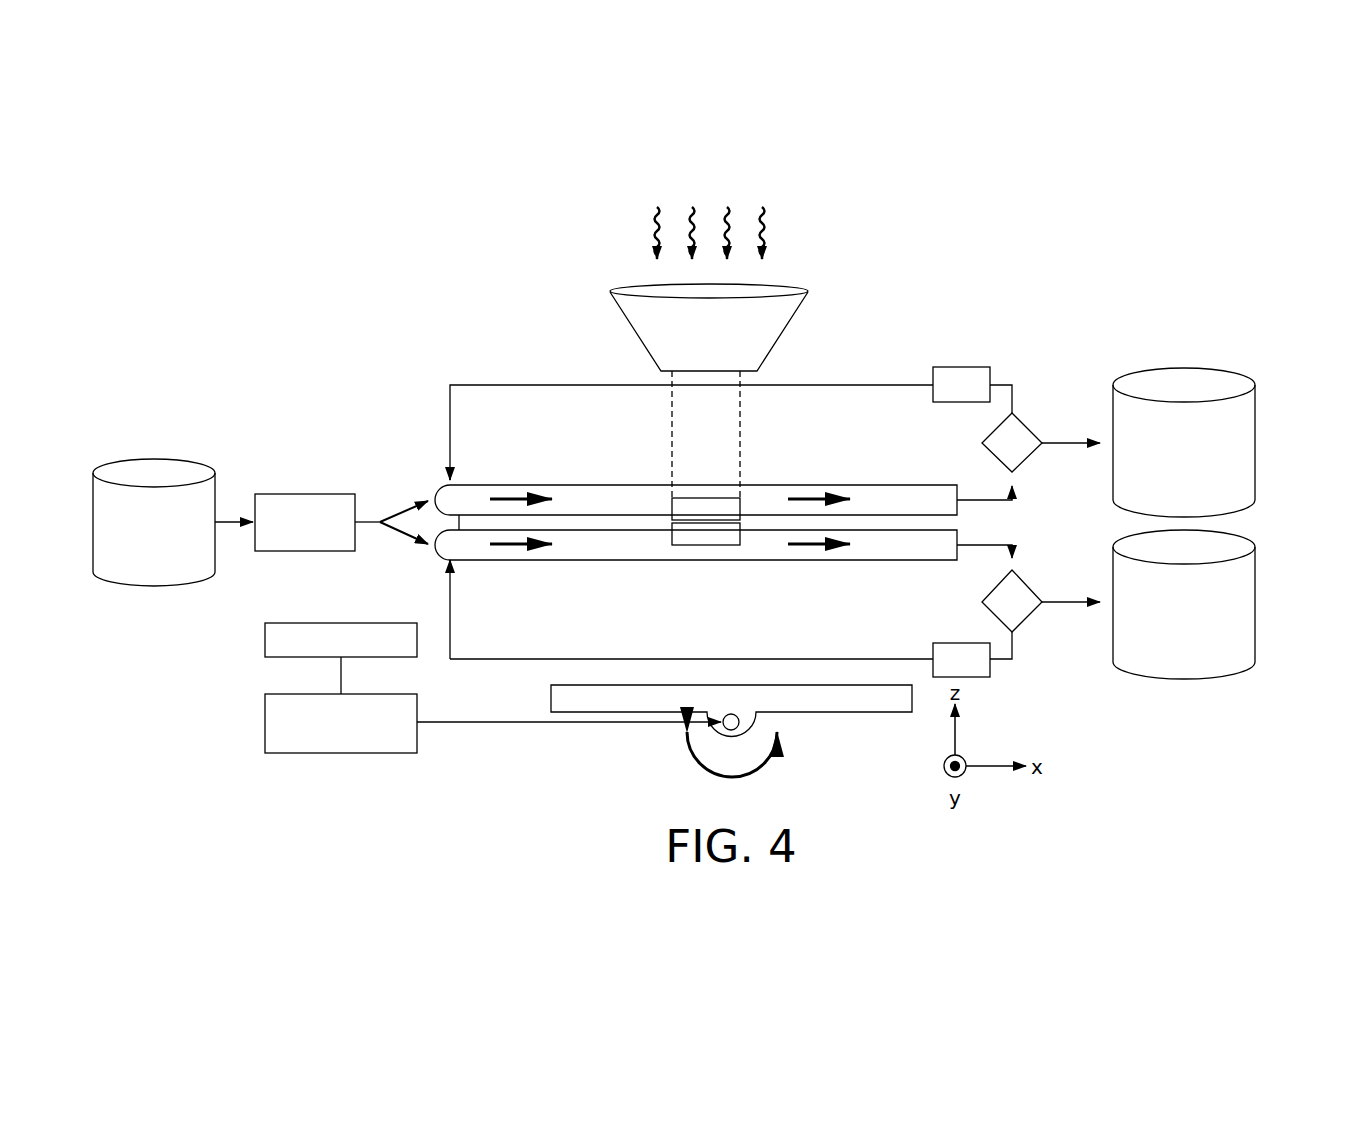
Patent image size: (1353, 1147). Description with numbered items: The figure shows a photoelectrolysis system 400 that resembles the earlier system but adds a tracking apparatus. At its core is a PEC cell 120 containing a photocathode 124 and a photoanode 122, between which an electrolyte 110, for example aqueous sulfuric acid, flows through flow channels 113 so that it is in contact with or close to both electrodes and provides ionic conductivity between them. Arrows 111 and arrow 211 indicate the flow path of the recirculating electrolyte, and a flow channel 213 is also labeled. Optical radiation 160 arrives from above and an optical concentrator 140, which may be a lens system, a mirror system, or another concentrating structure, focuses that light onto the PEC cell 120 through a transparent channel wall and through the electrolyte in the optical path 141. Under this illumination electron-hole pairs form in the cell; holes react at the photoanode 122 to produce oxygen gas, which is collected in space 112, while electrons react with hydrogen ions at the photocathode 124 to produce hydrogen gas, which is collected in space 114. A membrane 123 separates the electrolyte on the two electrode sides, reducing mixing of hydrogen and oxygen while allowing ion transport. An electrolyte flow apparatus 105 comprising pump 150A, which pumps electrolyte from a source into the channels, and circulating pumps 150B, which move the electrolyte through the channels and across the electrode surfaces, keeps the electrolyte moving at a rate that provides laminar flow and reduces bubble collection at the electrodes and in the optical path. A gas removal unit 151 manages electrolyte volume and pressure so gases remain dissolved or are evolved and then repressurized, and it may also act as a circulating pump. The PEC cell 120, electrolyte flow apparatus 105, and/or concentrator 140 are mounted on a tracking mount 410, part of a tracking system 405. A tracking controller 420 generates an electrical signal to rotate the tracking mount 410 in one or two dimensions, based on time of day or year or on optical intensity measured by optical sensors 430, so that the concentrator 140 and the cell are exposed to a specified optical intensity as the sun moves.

The photoelectrolysis system 400 is at (992, 302).
The optical radiation 160 is at (766, 246).
The optical concentrator 140 is at (783, 330).
The optical path 141 is at (718, 433).
The flow channels 113 is at (470, 383).
The electrolyte 110 is at (156, 459).
The pump 150A is at (306, 494).
The circulating pump 150B is at (972, 367).
The PEC cell 120 is at (696, 516).
The flow path arrow 211 is at (515, 499).
The flow channel 213 is at (556, 485).
The membrane 123 is at (891, 512).
The flow path arrows 111 is at (820, 547).
The photocathode 124 is at (695, 498).
The photoanode 122 is at (705, 545).
The gas removal unit 151 is at (1030, 458).
The hydrogen collection space 114 is at (1220, 382).
The oxygen collection space 112 is at (1220, 545).
The electrolyte flow apparatus 105 is at (1024, 664).
The optical sensors 430 is at (265, 640).
The tracking controller 420 is at (265, 722).
The tracking mount 410 is at (822, 685).
The tracking system 405 is at (452, 776).